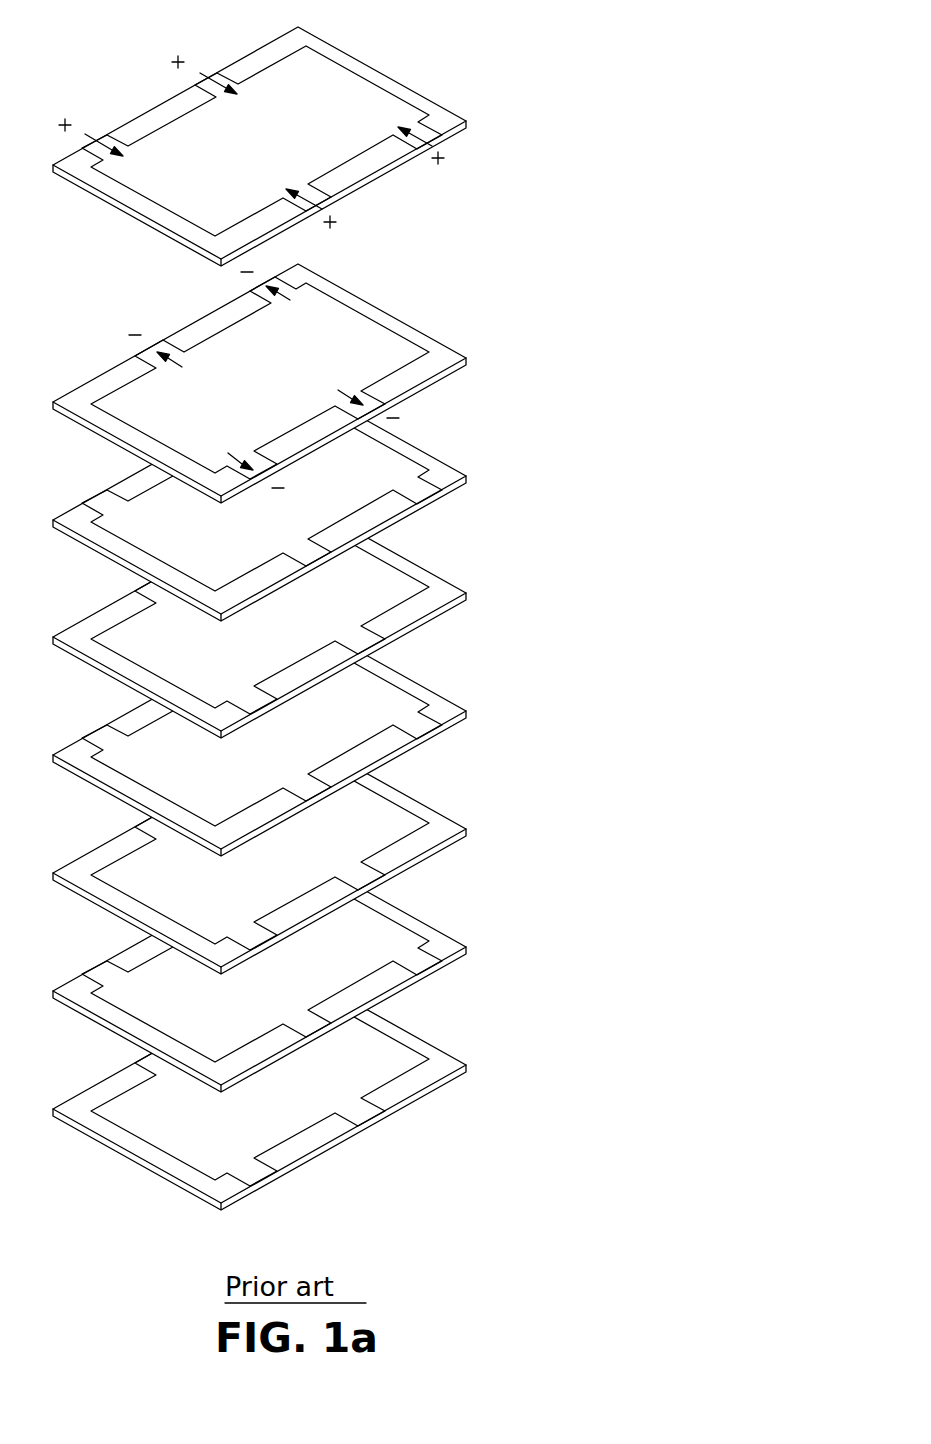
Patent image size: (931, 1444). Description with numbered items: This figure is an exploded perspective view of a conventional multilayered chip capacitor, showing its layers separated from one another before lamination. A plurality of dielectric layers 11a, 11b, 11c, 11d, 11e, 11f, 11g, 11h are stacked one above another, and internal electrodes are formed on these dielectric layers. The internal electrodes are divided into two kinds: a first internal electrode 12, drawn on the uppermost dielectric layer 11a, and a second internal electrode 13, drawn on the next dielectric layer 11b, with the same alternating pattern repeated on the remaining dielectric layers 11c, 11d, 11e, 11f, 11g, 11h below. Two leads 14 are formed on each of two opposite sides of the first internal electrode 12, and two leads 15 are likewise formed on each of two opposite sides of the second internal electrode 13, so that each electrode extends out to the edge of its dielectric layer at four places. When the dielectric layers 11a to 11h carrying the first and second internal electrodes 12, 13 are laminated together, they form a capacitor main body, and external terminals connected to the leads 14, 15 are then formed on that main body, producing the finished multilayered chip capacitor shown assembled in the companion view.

The dielectric layer 11a is at (461, 128).
The dielectric layer 11b is at (468, 362).
The dielectric layer 11c is at (468, 481).
The dielectric layer 11d is at (468, 598).
The dielectric layer 11e is at (468, 716).
The dielectric layer 11f is at (468, 834).
The dielectric layer 11g is at (468, 952).
The dielectric layer 11h is at (468, 1070).
The first internal electrode 12 is at (146, 183).
The second internal electrode 13 is at (122, 410).
The lead 14 is at (228, 86).
The lead 15 is at (163, 346).